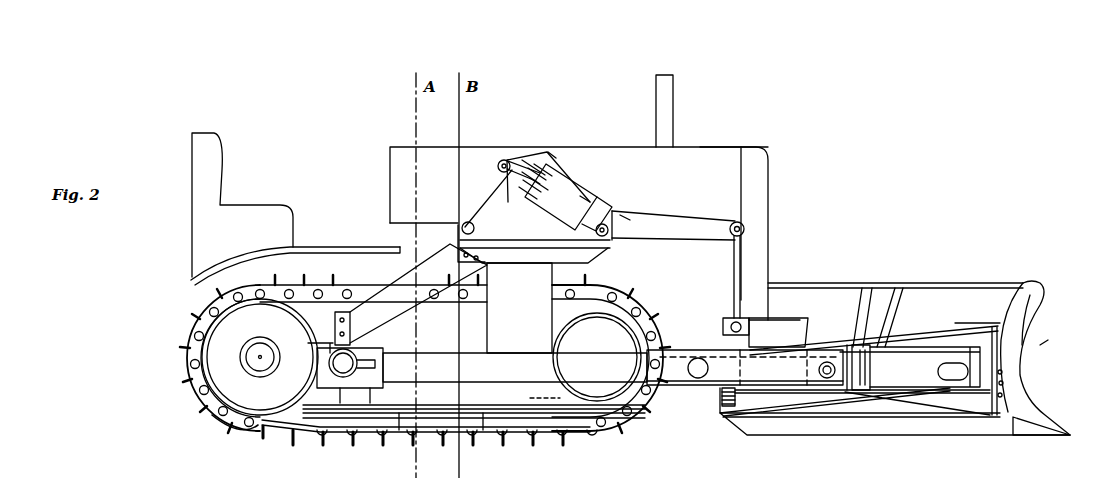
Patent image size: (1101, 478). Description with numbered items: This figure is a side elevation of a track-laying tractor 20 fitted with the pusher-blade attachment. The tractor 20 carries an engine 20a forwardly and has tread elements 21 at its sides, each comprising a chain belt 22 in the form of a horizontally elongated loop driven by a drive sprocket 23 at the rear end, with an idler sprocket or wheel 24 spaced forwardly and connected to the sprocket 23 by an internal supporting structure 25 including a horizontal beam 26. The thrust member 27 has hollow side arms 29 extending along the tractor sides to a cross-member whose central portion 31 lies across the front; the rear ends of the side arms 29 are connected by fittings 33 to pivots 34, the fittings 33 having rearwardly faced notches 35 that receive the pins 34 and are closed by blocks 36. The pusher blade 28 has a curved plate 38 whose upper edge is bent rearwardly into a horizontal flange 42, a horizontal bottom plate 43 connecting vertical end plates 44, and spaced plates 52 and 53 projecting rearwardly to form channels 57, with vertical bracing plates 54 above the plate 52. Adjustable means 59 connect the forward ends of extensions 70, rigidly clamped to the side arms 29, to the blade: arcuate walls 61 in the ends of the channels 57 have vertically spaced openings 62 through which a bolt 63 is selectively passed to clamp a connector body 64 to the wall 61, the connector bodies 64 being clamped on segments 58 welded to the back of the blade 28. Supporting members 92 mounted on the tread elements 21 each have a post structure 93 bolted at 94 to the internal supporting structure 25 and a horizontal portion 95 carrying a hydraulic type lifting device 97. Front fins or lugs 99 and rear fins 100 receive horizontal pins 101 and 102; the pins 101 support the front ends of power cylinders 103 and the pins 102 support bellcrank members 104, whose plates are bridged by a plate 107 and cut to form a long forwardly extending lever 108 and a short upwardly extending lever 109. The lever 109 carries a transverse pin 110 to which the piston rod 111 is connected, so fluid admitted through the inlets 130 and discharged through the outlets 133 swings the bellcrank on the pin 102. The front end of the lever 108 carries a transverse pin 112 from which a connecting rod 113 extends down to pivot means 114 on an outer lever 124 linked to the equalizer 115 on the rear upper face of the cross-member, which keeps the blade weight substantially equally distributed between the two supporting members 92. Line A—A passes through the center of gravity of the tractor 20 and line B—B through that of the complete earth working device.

The tractor 20 is at (324, 205).
The engine 20a is at (712, 146).
The tread elements 21 is at (186, 322).
The chain belt 22 is at (198, 404).
The drive sprocket 23 is at (218, 359).
The idler sprocket or wheel 24 is at (630, 414).
The internal supporting structure 25 is at (398, 398).
The horizontal beam 26 is at (476, 398).
The thrust member 27 is at (627, 352).
The pusher blade 28 is at (1032, 350).
The side arms 29 is at (432, 364).
The central portion 31 is at (308, 344).
The fittings 33 is at (368, 392).
The pivots 34 is at (342, 392).
The notches 35 is at (328, 374).
The blocks 36 is at (330, 360).
The curved plate 38 is at (958, 290).
The horizontal flange 42 is at (882, 286).
The horizontal bottom plate 43 is at (888, 418).
The vertical end plates 44 is at (1028, 308).
The plate 52 is at (920, 343).
The plate 53 is at (925, 410).
The vertical bracing plates 54 is at (858, 286).
The channels 57 is at (965, 345).
The segments 58 is at (722, 410).
The adjustable means 59 is at (1032, 425).
The arcuate walls 61 is at (1004, 397).
The openings 62 is at (1005, 384).
The bolt 63 is at (1004, 372).
The connector body 64 is at (985, 415).
The extension 70 is at (768, 378).
The supporting members 92 is at (494, 268).
The post structure 93 is at (519, 308).
The bolted connection 94 is at (548, 398).
The horizontal portion 95 is at (570, 252).
The hydraulic type lifting device 97 is at (590, 190).
The fins or lugs 99 is at (602, 242).
The fins 100 is at (462, 228).
The front pins 101 is at (606, 222).
The pins 102 is at (468, 221).
The power cylinder 103 is at (548, 162).
The bellcrank members 104 is at (546, 200).
The plate 107 is at (684, 212).
The lever 108 is at (656, 206).
The lever 109 is at (499, 166).
The transverse pin 110 is at (508, 158).
The piston rod 111 is at (526, 164).
The transverse pin 112 is at (745, 228).
The connecting rod 113 is at (740, 255).
The pivot means 114 is at (722, 328).
The equalizer 115 is at (806, 320).
The outer levers 124 is at (780, 316).
The fluid inlets 130 is at (630, 210).
The outlets 133 is at (548, 150).